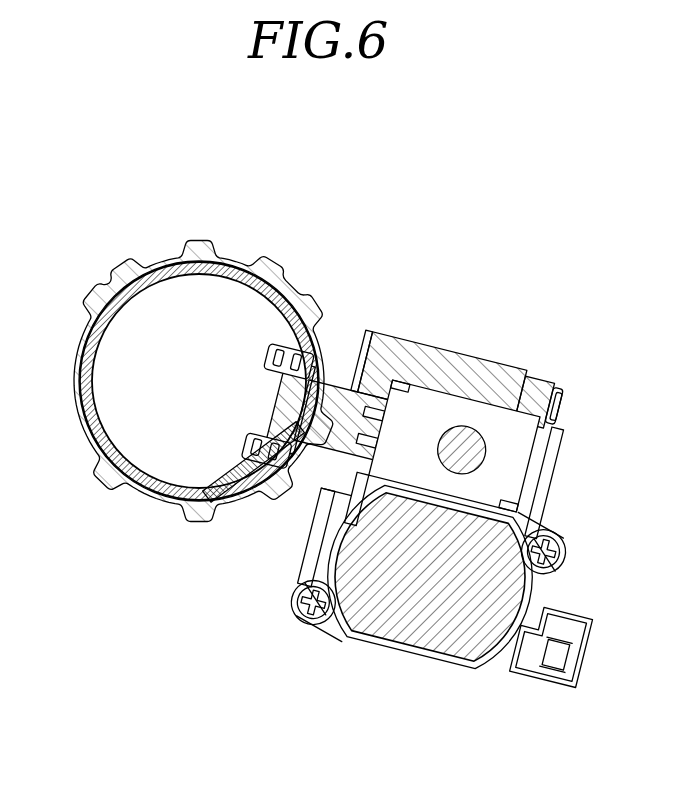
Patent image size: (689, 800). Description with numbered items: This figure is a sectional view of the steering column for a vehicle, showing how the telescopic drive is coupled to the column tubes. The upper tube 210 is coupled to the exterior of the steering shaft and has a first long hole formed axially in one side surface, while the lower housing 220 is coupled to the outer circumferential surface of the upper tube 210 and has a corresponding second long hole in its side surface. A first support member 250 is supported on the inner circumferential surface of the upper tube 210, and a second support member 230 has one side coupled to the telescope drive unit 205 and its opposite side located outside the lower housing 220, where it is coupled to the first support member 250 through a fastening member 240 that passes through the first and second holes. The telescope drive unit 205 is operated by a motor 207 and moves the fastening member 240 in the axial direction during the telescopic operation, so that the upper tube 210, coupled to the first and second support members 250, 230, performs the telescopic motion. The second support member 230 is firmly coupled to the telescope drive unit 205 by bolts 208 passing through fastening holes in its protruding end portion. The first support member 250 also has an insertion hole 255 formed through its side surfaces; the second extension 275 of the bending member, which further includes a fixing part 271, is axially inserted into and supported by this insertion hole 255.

The telescope drive unit 205 is at (519, 261).
The motor 207 is at (435, 632).
The bolts 208 is at (566, 396).
The upper tube 210 is at (76, 370).
The lower housing 220 is at (118, 268).
The second support member 230 is at (492, 372).
The fastening member 240 is at (343, 398).
The first support member 250 is at (302, 330).
The insertion hole 255 is at (262, 362).
The fixing part 271 is at (256, 425).
The second extension 275 is at (240, 443).